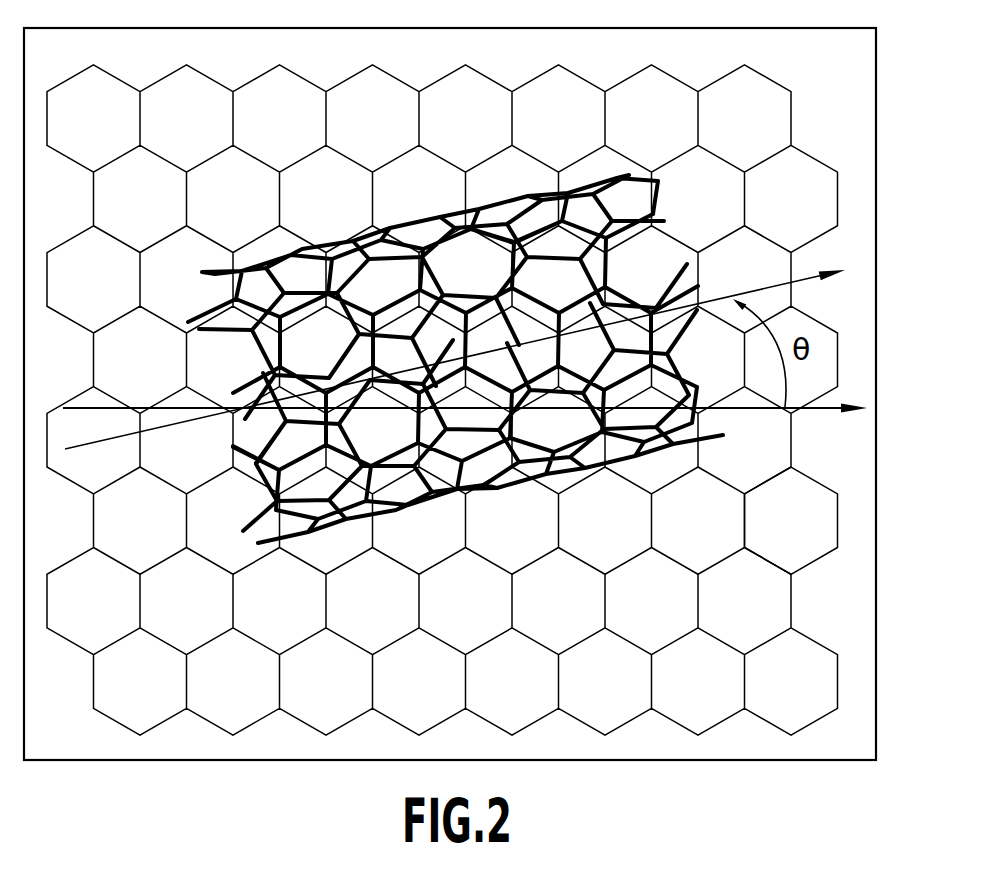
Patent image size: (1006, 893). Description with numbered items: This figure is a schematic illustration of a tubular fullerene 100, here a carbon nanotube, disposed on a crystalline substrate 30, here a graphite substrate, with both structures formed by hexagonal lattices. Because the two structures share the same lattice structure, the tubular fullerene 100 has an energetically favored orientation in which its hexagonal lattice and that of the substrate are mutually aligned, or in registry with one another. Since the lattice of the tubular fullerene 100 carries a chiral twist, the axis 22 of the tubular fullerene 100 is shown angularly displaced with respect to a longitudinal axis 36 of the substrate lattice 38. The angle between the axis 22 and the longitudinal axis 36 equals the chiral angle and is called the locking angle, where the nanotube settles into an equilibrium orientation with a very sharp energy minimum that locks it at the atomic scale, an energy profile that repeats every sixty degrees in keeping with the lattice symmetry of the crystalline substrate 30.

The crystalline substrate 30 is at (852, 118).
The tubular fullerene 100 is at (655, 208).
The axis 22 is at (812, 277).
The longitudinal axis 36 is at (823, 412).
The substrate lattice 38 is at (835, 547).